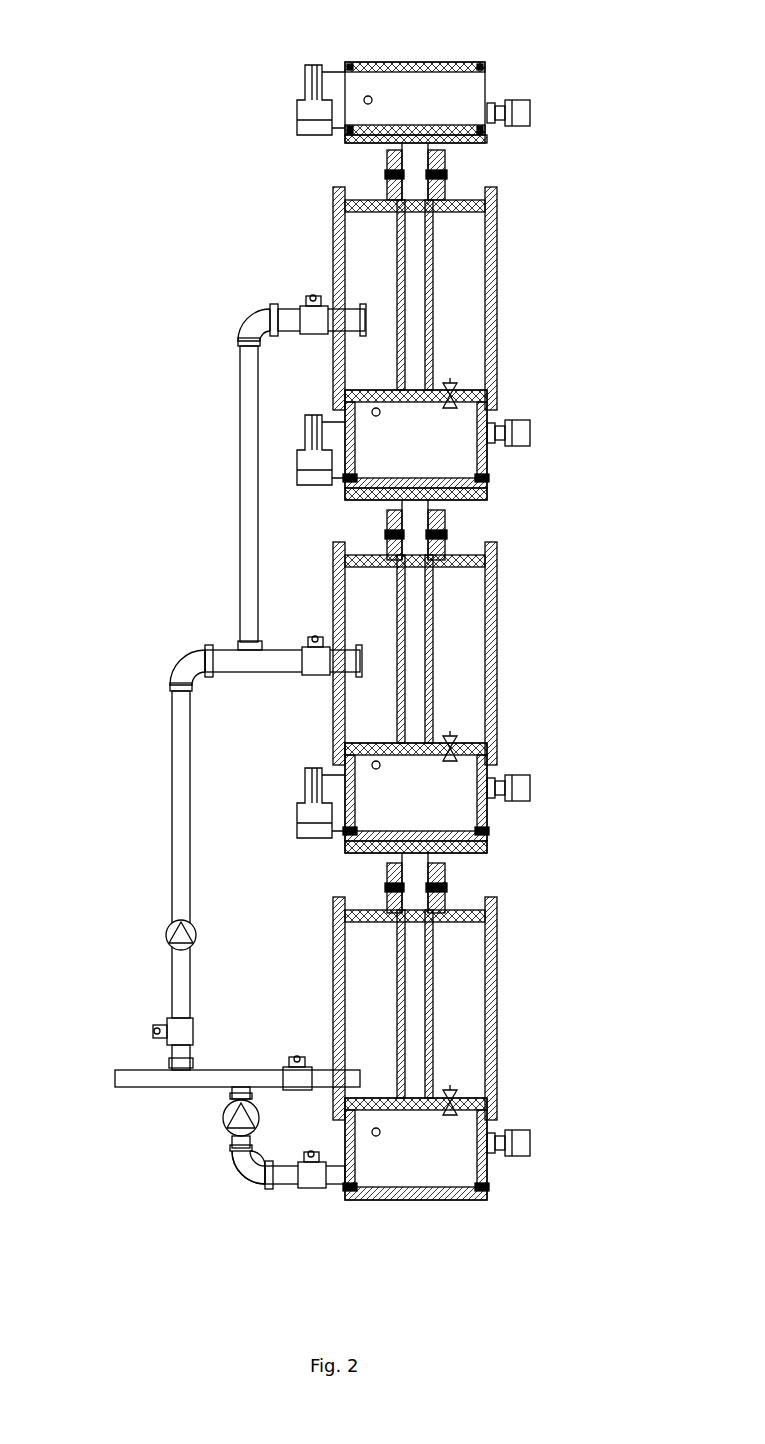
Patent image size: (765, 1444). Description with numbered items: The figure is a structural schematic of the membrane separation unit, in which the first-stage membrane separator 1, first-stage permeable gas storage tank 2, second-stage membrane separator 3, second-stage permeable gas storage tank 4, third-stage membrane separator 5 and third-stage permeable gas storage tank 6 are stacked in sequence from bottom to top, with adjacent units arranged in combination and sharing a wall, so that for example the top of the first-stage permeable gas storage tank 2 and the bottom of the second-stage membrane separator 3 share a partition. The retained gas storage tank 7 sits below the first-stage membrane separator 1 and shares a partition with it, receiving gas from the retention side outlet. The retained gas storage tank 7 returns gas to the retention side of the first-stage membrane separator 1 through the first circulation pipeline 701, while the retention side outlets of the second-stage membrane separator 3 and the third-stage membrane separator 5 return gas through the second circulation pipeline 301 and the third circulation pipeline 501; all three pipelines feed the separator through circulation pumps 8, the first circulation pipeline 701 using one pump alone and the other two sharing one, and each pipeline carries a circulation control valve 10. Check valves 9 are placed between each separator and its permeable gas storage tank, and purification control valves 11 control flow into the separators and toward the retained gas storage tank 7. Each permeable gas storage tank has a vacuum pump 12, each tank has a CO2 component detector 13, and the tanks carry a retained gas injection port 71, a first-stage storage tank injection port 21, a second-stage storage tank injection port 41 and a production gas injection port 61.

The first-stage membrane separator 1 is at (497, 995).
The first-stage permeable gas storage tank 2 is at (415, 818).
The second-stage membrane separator 3 is at (497, 693).
The second-stage permeable gas storage tank 4 is at (440, 460).
The third-stage membrane separator 5 is at (497, 325).
The third-stage permeable gas storage tank 6 is at (430, 85).
The retained gas storage tank 7 is at (443, 1150).
The circulation pump 8 is at (166, 935).
The check valve 9 is at (470, 148).
The circulation control valve 10 is at (268, 318).
The purification control valve 11 is at (458, 386).
The vacuum pump 12 is at (297, 108).
The CO2 component detector 13 is at (368, 96).
The first-stage storage tank injection port 21 is at (530, 788).
The second-stage storage tank injection port 41 is at (530, 432).
The production gas injection port 61 is at (530, 113).
The retained gas injection port 71 is at (530, 1143).
The second circulation pipeline 301 is at (180, 782).
The third circulation pipeline 501 is at (240, 392).
The first circulation pipeline 701 is at (240, 1178).